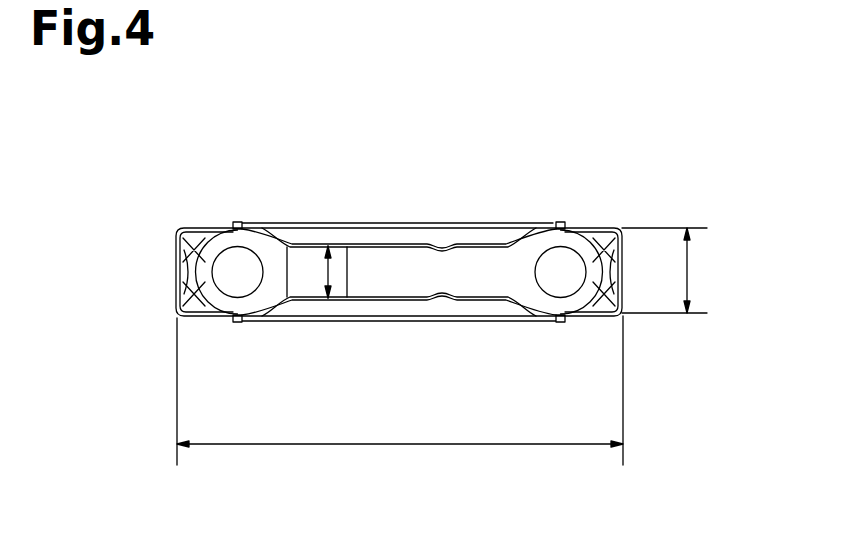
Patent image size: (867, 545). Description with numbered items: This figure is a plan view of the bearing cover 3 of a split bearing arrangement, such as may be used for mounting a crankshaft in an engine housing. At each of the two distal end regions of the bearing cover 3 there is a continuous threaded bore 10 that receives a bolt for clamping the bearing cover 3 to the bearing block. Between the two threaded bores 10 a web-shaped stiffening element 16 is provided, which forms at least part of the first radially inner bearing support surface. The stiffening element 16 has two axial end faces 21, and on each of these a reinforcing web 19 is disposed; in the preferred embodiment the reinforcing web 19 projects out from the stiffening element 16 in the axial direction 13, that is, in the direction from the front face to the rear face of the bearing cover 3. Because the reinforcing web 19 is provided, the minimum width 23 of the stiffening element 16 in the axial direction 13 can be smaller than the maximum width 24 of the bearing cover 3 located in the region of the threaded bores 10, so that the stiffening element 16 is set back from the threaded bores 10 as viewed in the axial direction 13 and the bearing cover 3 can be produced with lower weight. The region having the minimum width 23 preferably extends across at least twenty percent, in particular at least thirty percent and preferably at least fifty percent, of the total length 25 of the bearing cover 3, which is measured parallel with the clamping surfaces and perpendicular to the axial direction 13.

The bearing cover 3 is at (567, 135).
The threaded bore 10 is at (572, 255).
The axial direction 13 is at (127, 300).
The stiffening element 16 is at (372, 266).
The reinforcing web 19 is at (315, 224).
The axial end face 21 is at (341, 244).
The minimum width 23 is at (337, 271).
The maximum width 24 is at (694, 264).
The total length 25 is at (418, 451).